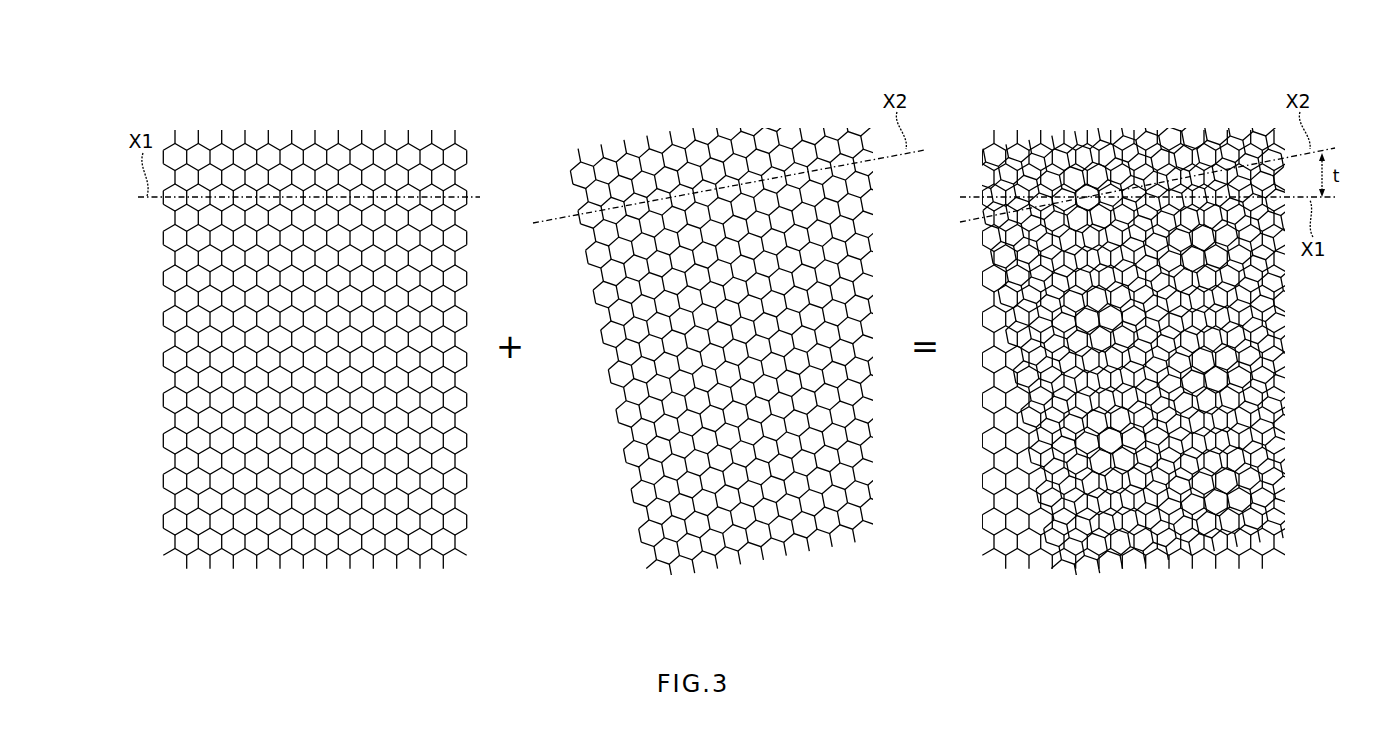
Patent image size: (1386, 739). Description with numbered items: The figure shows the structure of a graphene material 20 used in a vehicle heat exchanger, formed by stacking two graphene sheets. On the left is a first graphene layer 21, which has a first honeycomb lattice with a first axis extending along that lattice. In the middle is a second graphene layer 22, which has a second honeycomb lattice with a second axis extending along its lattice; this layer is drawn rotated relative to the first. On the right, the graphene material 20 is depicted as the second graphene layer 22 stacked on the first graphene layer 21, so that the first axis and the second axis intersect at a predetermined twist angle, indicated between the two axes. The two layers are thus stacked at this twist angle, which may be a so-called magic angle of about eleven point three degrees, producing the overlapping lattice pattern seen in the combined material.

The graphene material 20 is at (1138, 118).
The first graphene layer 21 is at (325, 122).
The second graphene layer 22 is at (722, 118).